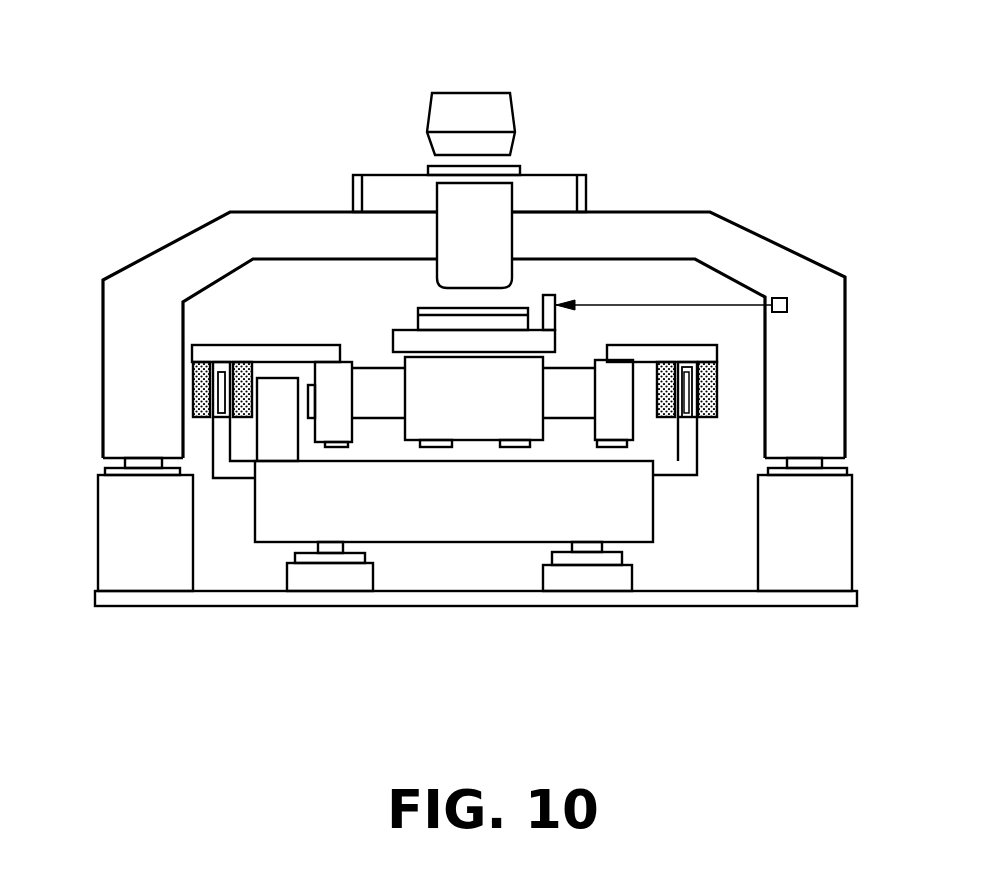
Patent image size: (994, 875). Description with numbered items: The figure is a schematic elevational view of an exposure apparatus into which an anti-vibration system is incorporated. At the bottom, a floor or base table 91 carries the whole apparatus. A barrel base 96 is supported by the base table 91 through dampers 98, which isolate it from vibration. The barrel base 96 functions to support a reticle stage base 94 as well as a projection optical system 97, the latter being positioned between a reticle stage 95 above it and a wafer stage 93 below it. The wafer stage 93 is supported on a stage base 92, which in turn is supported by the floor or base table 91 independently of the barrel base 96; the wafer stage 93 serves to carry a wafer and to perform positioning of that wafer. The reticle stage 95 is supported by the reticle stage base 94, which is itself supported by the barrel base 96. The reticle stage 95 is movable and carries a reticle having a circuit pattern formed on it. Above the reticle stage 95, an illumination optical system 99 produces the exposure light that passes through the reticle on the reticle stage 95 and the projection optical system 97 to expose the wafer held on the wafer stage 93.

The base table 91 is at (325, 600).
The stage base 92 is at (643, 507).
The wafer stage 93 is at (390, 338).
The reticle stage base 94 is at (352, 190).
The reticle stage 95 is at (520, 167).
The barrel base 96 is at (728, 233).
The projection optical system 97 is at (438, 205).
The damper 98 is at (850, 466).
The illumination optical system 99 is at (505, 102).